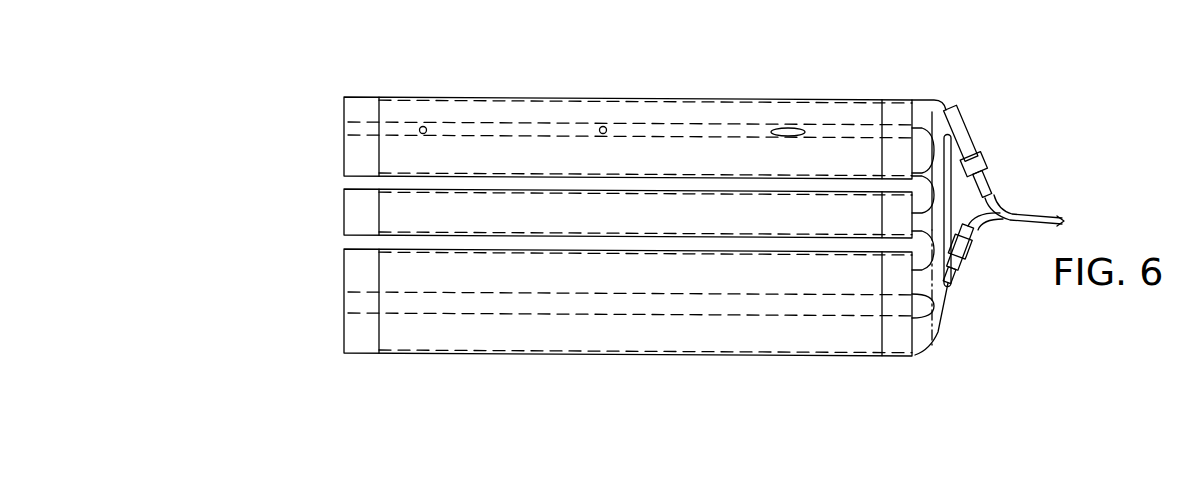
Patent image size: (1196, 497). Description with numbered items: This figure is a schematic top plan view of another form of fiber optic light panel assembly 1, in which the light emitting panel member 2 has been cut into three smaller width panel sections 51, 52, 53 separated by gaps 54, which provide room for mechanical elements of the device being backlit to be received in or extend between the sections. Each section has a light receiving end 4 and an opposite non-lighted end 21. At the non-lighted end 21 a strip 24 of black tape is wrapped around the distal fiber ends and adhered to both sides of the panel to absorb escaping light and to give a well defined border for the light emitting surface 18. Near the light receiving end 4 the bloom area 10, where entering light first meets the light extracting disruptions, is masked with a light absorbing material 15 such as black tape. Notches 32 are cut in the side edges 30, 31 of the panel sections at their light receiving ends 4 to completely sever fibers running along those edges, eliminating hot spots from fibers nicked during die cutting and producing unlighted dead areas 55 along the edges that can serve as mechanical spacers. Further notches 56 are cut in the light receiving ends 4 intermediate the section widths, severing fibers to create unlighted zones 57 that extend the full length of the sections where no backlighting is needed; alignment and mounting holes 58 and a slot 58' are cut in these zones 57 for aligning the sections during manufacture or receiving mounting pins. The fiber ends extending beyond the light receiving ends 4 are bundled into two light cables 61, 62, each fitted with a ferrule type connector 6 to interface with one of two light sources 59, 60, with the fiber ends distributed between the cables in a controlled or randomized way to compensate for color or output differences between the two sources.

The fiber optic light panel assembly 1 is at (860, 92).
The light emitting panel member 2 is at (770, 97).
The light receiving end 4 is at (928, 160).
The ferrule type connector 6 is at (1012, 191).
The bloom area 10 is at (890, 92).
The light absorbing material 15 is at (890, 159).
The light emitting surface 18 is at (688, 107).
The non-lighted end 21 is at (335, 137).
The strip of black tape 24 is at (362, 103).
The side edge 30 is at (582, 98).
The side edge 31 is at (585, 178).
The notches 32 is at (927, 102).
The panel section 51 is at (393, 277).
The panel section 52 is at (388, 223).
The panel section 53 is at (393, 158).
The gaps 54 is at (357, 182).
The unlighted/dead areas 55 is at (583, 255).
The notches 56 is at (926, 135).
The unlighted/dead zones 57 is at (838, 133).
The alignment and/or mounting hole 58 is at (542, 147).
The alignment and/or mounting slot 58' is at (761, 148).
The light source 59 is at (988, 190).
The light source 60 is at (978, 247).
The light cable 61 is at (1035, 211).
The light cable 62 is at (1016, 212).